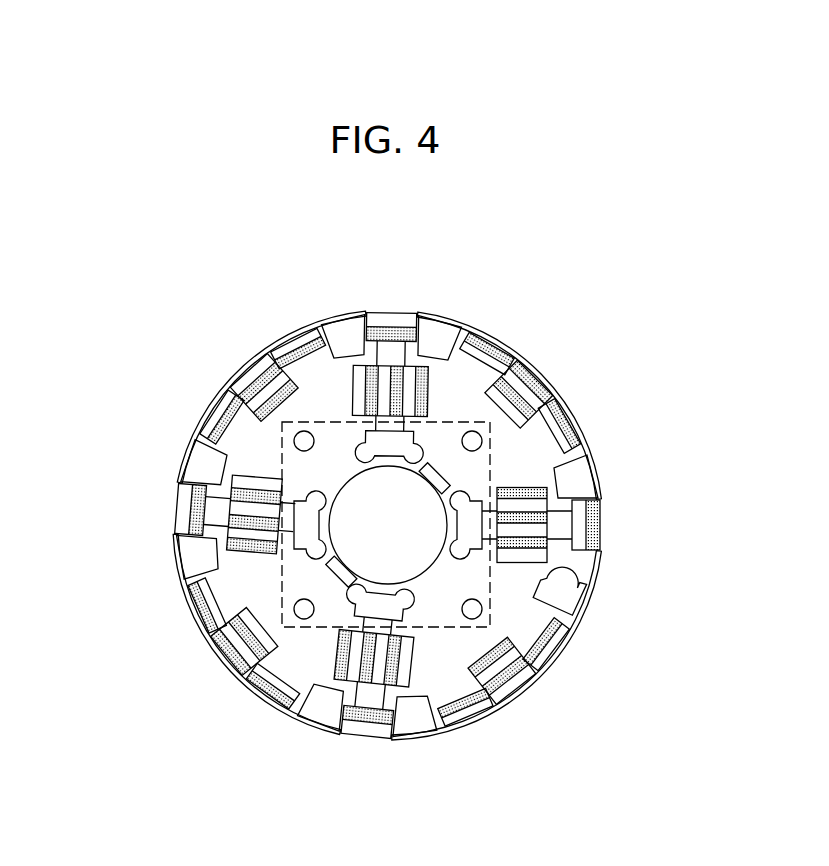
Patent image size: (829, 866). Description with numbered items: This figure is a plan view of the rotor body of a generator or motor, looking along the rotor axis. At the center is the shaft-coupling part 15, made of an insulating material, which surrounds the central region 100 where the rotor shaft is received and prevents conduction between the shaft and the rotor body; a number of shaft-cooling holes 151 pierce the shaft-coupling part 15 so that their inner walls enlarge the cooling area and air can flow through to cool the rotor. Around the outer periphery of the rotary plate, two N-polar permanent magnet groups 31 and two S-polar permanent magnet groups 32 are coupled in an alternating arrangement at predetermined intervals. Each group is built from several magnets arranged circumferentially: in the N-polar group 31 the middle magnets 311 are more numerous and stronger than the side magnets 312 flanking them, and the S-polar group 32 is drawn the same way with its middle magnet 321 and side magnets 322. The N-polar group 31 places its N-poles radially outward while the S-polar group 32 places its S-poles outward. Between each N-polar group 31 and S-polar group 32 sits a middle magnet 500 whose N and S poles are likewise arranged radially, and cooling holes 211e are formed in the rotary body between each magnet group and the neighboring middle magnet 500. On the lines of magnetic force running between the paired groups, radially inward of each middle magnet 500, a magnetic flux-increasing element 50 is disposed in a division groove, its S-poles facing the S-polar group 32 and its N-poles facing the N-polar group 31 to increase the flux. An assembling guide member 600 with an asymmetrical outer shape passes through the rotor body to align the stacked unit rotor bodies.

The shaft-coupling part 15 is at (428, 627).
The N-polar permanent magnet group 31 is at (358, 504).
The middle magnets 311 is at (527, 383).
The side magnets 312 is at (495, 342).
The S-polar permanent magnet group 32 is at (415, 516).
The third magnet 321 is at (250, 375).
The fourth magnet 322 is at (295, 342).
The magnetic flux-increasing element 50 is at (412, 362).
The lens holder 100 is at (417, 497).
The shaft-cooling holes 151 is at (397, 440).
The cooling holes 211e is at (338, 335).
The middle magnet 500 is at (394, 313).
The assembling guide member 600 is at (570, 598).